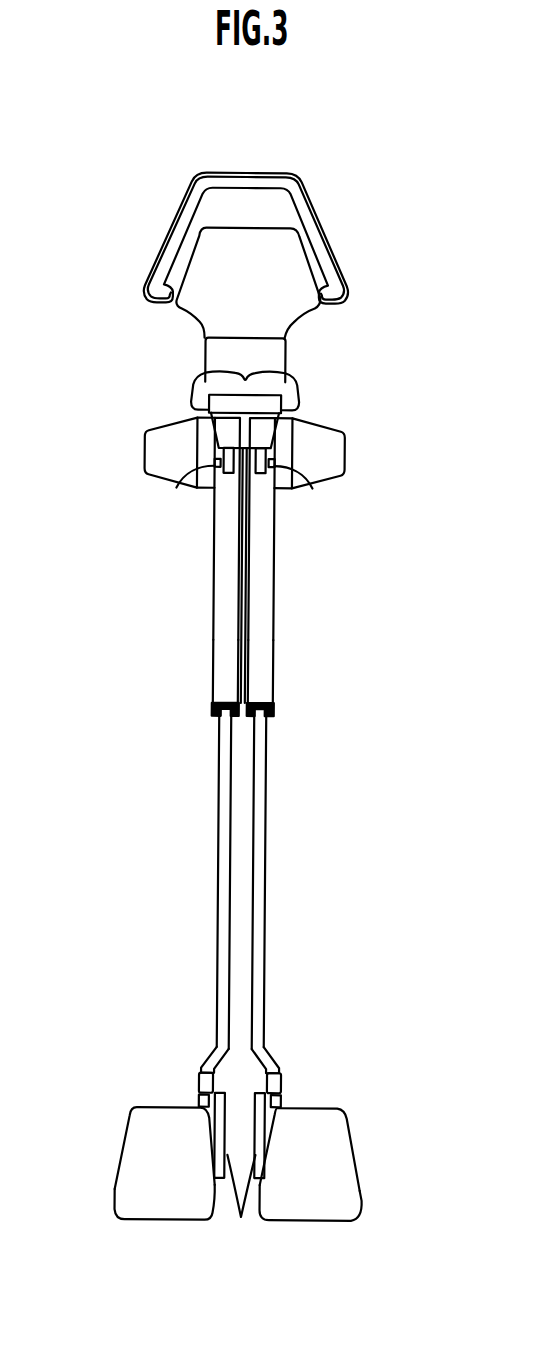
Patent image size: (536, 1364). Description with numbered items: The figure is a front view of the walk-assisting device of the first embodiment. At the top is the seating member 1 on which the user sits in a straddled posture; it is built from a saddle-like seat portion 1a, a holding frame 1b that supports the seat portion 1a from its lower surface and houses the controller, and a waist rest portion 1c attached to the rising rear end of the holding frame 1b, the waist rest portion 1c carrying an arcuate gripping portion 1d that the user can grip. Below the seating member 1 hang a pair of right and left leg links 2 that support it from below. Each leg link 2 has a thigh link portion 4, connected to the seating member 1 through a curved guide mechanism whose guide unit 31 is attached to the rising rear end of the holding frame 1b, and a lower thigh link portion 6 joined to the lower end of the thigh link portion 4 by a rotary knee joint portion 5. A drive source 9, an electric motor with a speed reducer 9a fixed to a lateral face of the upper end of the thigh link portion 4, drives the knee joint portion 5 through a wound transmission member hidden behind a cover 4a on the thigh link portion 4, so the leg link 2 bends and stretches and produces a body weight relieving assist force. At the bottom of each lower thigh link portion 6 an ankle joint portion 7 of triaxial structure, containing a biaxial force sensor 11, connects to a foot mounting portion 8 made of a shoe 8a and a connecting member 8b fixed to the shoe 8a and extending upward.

The seating member 1 is at (304, 386).
The seat portion 1a is at (200, 391).
The holding frame 1b is at (282, 401).
The waist rest portion 1c is at (302, 268).
The arcuate gripping portion 1d is at (260, 172).
The leg link 2 is at (332, 621).
The thigh link portion 4 is at (274, 580).
The cover 4a is at (270, 651).
The knee joint portion 5 is at (276, 706).
The lower thigh link portion 6 is at (260, 934).
The ankle joint portion 7 is at (275, 1048).
The foot mounting portion 8 is at (355, 1120).
The shoe 8a is at (345, 1185).
The connecting member 8b is at (242, 1208).
The drive source 9 is at (344, 456).
The speed reducer 9a is at (278, 490).
The force sensor 11 is at (283, 1087).
The guide unit 31 is at (308, 484).